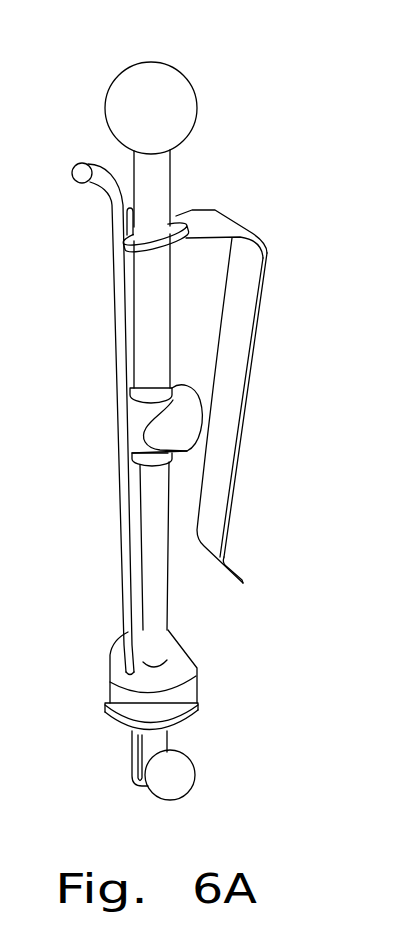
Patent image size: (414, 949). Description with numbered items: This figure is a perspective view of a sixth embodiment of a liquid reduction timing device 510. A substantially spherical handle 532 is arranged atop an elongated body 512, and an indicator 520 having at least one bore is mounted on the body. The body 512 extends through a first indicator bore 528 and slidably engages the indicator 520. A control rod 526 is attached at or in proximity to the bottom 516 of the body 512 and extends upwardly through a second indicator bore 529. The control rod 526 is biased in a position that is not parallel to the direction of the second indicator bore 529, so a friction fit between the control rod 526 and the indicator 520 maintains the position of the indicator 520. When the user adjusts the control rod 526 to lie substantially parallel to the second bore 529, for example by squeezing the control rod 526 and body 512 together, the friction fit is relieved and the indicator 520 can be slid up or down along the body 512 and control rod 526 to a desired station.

The liquid reduction timing device 510 is at (263, 179).
The body 512 is at (168, 587).
The bottom 516 is at (155, 777).
The indicator 520 is at (188, 687).
The control rod 526 is at (118, 362).
The first indicator bore 528 is at (107, 707).
The second indicator bore 529 is at (130, 688).
The substantially spherical handle 532 is at (140, 68).